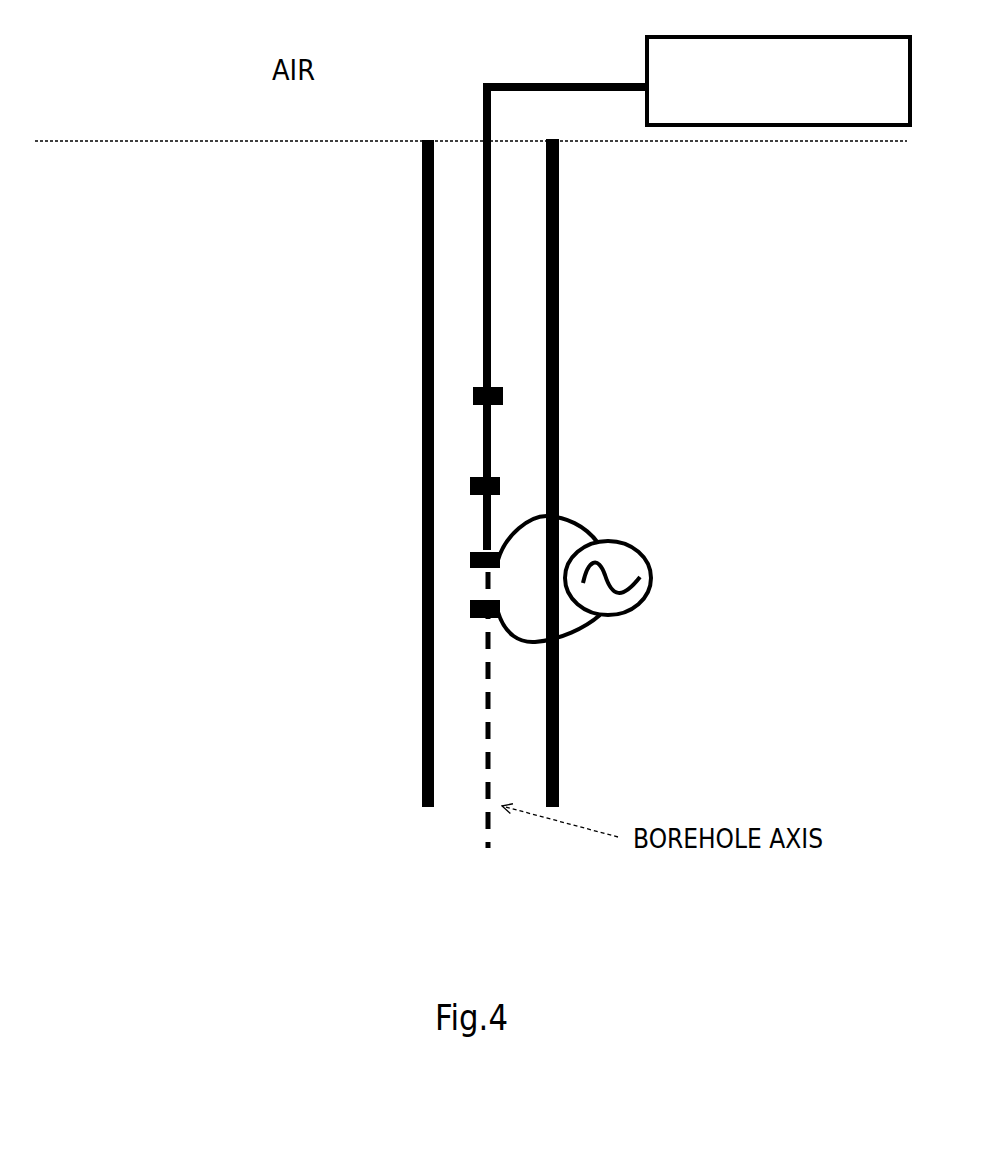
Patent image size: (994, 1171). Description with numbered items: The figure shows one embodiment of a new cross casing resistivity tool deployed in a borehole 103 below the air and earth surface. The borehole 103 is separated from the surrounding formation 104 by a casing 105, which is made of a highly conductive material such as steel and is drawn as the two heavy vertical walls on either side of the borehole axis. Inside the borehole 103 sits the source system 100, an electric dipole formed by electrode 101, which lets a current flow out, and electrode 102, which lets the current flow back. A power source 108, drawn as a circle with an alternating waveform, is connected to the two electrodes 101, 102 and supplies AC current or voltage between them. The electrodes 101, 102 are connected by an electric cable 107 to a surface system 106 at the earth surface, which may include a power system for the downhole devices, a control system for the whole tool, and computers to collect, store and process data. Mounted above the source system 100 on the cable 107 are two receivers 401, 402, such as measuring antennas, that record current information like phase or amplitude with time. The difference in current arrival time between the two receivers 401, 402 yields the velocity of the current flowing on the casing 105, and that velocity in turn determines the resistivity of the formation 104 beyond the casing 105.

The source system 100 is at (464, 563).
The electrode 101 is at (469, 540).
The electrode 102 is at (471, 629).
The borehole 103 is at (455, 307).
The formation 104 is at (635, 473).
The casing 105 is at (439, 437).
The surface system 106 is at (644, 55).
The electric cable 107 is at (494, 333).
The power source 108 is at (656, 579).
The receiver 401 is at (469, 483).
The receiver 402 is at (460, 385).